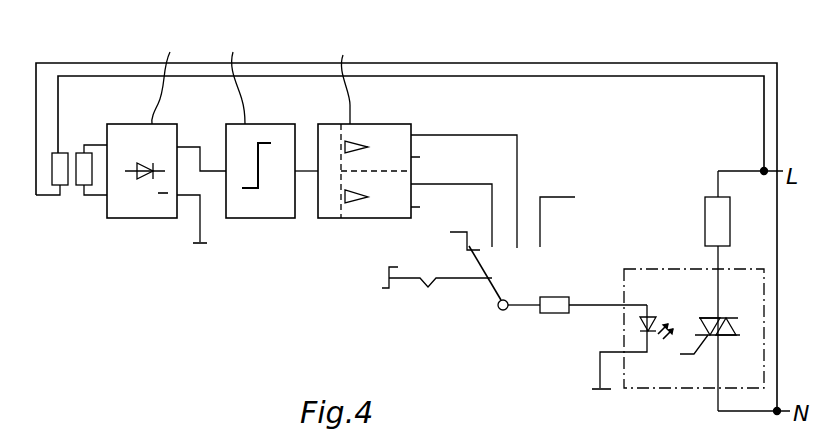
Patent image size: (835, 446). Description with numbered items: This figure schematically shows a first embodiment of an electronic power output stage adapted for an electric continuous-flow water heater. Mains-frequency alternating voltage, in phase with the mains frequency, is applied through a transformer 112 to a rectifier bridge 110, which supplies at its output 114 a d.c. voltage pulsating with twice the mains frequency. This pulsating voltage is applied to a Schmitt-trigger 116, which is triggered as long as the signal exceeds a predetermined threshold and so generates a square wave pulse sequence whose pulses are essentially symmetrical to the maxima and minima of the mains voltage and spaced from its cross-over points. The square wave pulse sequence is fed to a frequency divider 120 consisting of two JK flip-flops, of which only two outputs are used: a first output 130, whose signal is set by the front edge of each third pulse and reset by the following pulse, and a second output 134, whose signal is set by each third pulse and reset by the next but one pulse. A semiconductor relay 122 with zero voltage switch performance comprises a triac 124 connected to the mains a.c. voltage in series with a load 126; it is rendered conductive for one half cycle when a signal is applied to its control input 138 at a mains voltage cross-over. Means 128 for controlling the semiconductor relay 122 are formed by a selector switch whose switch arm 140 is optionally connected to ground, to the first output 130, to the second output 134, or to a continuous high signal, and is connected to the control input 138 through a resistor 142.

The rectifier bridge 110 is at (142, 208).
The transformer 112 is at (71, 193).
The output 114 is at (187, 145).
The Schmitt-trigger 116 is at (245, 207).
The frequency divider 120 is at (390, 140).
The semiconductor relay 122 is at (638, 292).
The triac 124 is at (717, 315).
The load 126 is at (704, 213).
The means for controlling the semiconductor relay 128 is at (533, 188).
The first output 130 is at (453, 186).
The second output 134 is at (497, 130).
The control input 138 is at (602, 303).
The switch arm 140 is at (498, 278).
The resistor 142 is at (557, 307).